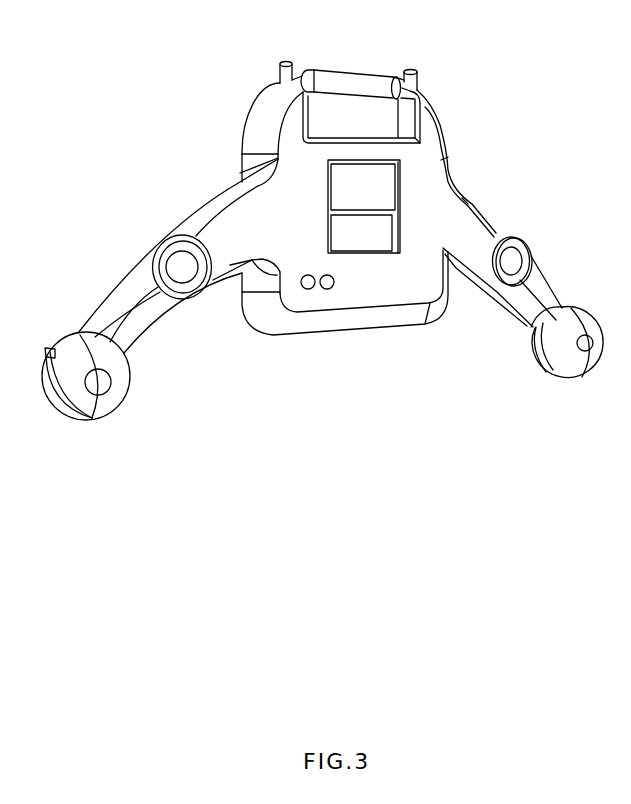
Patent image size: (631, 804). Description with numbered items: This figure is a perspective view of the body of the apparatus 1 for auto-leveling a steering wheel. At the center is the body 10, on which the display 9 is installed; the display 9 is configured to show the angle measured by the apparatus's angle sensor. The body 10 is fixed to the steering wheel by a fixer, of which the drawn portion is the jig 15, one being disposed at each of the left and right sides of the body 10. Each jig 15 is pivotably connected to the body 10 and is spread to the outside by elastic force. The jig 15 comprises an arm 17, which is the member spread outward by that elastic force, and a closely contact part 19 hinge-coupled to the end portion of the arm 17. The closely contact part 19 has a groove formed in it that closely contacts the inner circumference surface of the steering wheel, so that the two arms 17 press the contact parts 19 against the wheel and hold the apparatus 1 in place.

The apparatus for auto-leveling a steering wheel 1 is at (466, 62).
The display 9 is at (388, 188).
The body 10 is at (390, 290).
The jig 15 is at (304, 289).
The arm 17 is at (133, 310).
The closely contact part 19 is at (78, 347).